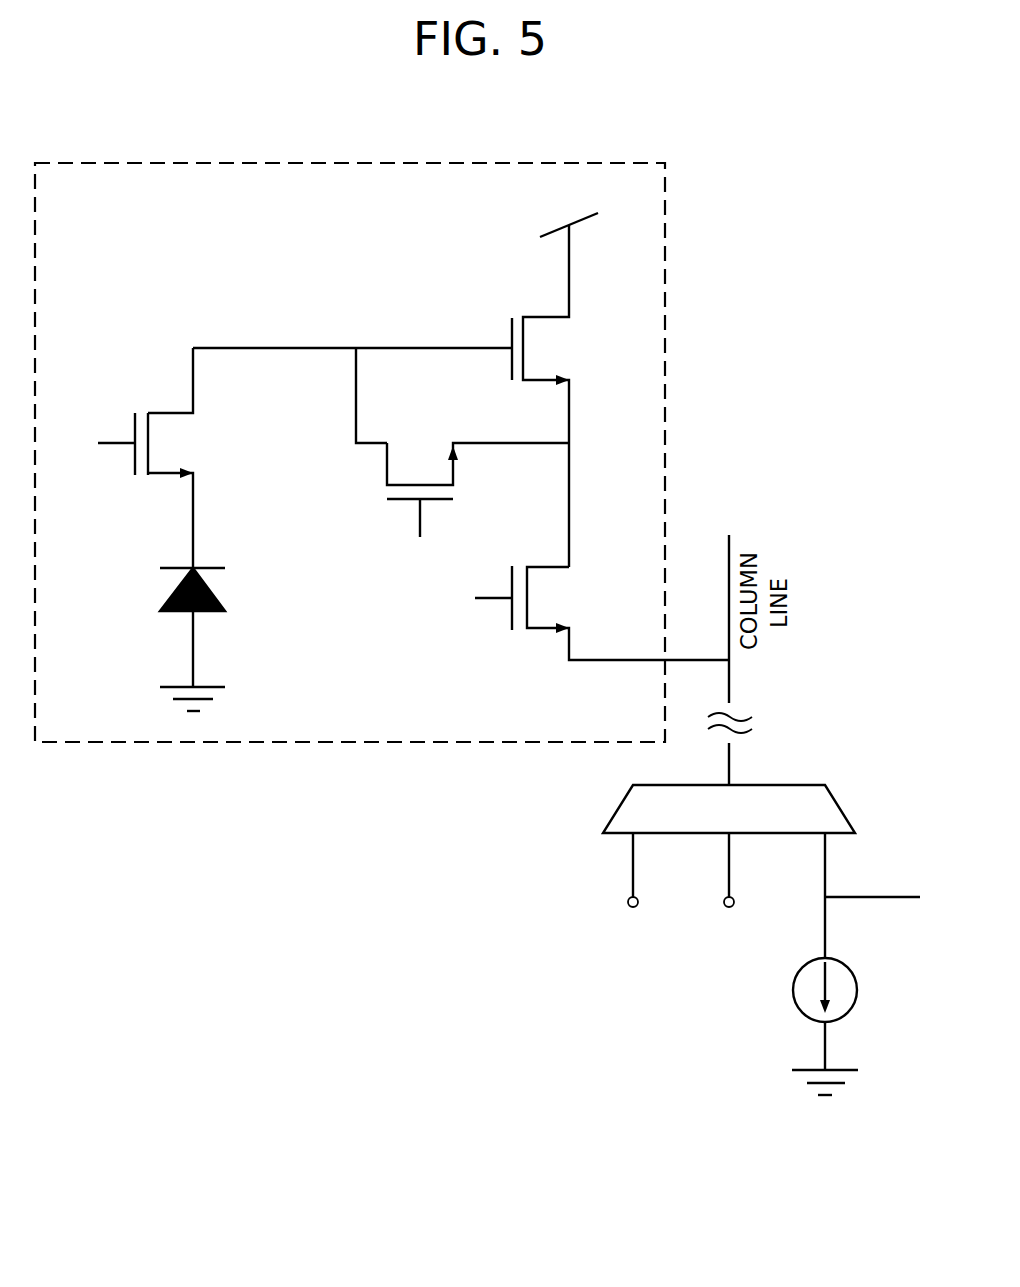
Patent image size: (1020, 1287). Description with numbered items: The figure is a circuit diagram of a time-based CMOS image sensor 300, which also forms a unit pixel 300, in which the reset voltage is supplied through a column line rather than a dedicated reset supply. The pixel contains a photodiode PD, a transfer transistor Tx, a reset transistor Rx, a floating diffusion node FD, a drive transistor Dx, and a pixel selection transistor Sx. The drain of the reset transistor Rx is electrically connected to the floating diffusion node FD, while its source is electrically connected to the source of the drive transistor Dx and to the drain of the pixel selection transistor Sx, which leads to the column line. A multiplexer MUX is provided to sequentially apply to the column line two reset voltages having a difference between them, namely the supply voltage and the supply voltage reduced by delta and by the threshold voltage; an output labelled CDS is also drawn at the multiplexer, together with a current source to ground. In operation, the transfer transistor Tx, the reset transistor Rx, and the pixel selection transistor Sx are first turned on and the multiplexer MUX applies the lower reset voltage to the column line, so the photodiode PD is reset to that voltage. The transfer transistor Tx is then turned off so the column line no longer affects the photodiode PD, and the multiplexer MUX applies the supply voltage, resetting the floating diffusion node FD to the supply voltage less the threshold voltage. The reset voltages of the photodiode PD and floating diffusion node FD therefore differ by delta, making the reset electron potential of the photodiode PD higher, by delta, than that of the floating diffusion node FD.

The time-based CMOS image sensor 300 is at (365, 163).
The transfer transistor Tx is at (162, 458).
The reset transistor Rx is at (478, 490).
The drive transistor Dx is at (559, 379).
The pixel selection transistor Sx is at (602, 613).
The photodiode PD is at (171, 639).
The floating diffusion node FD is at (352, 378).
The multiplexer MUX is at (729, 865).
The correlated double sampling circuit CDS is at (856, 964).